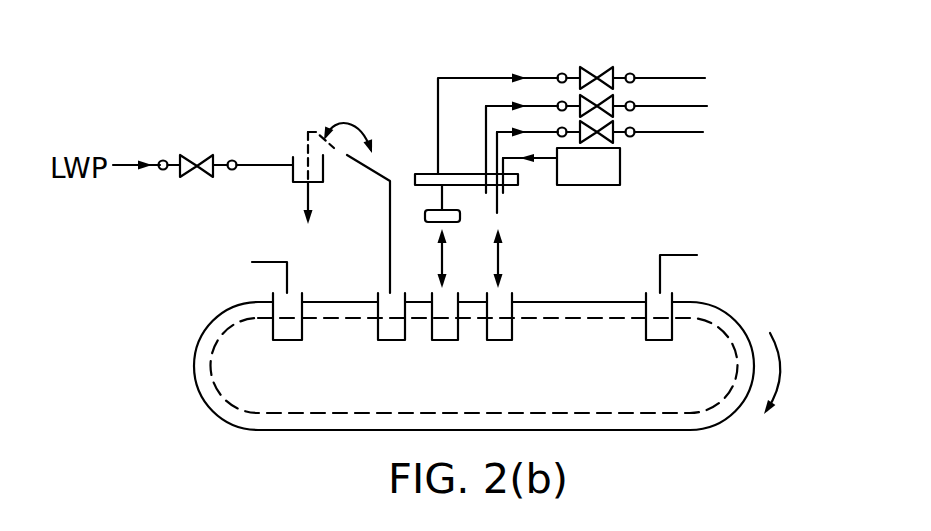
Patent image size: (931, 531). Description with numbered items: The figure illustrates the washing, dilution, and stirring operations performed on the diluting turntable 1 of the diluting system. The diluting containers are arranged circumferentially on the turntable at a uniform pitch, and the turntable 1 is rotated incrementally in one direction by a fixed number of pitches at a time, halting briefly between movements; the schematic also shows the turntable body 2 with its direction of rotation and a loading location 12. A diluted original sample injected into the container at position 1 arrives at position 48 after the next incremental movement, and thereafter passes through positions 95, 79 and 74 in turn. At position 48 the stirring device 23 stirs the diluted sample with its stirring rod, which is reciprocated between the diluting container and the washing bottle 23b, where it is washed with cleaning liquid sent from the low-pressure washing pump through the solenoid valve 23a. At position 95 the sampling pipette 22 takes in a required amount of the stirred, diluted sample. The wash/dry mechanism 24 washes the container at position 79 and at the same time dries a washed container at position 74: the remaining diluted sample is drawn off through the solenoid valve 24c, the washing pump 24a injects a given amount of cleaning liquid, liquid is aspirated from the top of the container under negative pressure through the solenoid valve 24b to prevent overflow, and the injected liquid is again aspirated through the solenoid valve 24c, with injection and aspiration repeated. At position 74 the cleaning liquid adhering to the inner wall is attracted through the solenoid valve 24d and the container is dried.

The diluting turntable 1 is at (287, 335).
The rotary wafer carrier 2 is at (204, 403).
The loading station 12 is at (288, 281).
The sampling pipette 22 is at (660, 272).
The stirring device 23 is at (353, 125).
The solenoid valve 23a is at (197, 158).
The washing bottle 23b is at (324, 176).
The wash/dry mechanism 24 is at (515, 187).
The washing pump 24a is at (561, 166).
The solenoid valve 24b is at (632, 112).
The solenoid valve 24c is at (630, 137).
The solenoid valve 24d is at (598, 70).
The position 48 is at (392, 335).
The position 74 is at (446, 335).
The position 79 is at (502, 335).
The position 95 is at (661, 335).